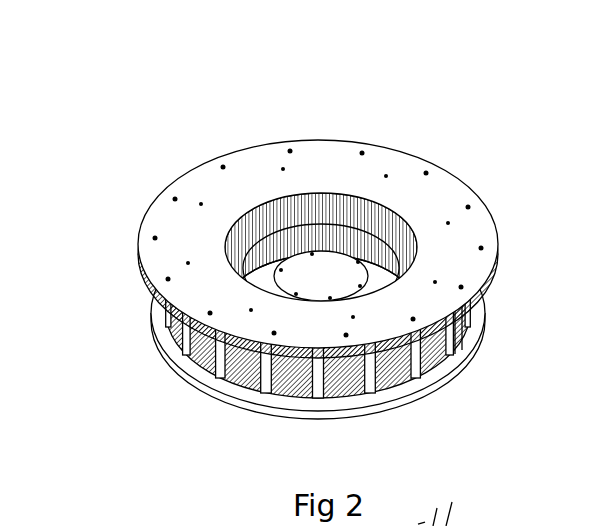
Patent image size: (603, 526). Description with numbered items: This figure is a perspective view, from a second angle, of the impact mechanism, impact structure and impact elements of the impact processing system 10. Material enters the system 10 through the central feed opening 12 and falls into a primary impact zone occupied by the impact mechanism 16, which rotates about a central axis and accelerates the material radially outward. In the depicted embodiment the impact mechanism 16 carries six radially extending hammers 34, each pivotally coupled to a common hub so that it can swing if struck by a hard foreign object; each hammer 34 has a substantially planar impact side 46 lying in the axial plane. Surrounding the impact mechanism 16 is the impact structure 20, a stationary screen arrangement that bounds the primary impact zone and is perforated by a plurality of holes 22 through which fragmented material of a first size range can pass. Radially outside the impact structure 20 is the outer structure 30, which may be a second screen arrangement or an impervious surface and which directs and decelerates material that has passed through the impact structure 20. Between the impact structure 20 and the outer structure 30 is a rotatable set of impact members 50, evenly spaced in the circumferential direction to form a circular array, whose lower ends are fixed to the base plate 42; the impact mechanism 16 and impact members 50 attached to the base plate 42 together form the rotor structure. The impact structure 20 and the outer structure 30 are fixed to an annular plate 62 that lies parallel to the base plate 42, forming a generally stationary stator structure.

The impact processing system 10 is at (529, 136).
The central feed opening 12 is at (212, 170).
The impact mechanism 16 is at (340, 198).
The impact structure 20 is at (367, 213).
The holes 22 is at (333, 368).
The outer structure 30 is at (487, 333).
The hammers 34 is at (400, 222).
The base plate 42 is at (417, 402).
The impact side 46 is at (383, 283).
The impact members 50 is at (433, 367).
The annular plate 62 is at (140, 236).